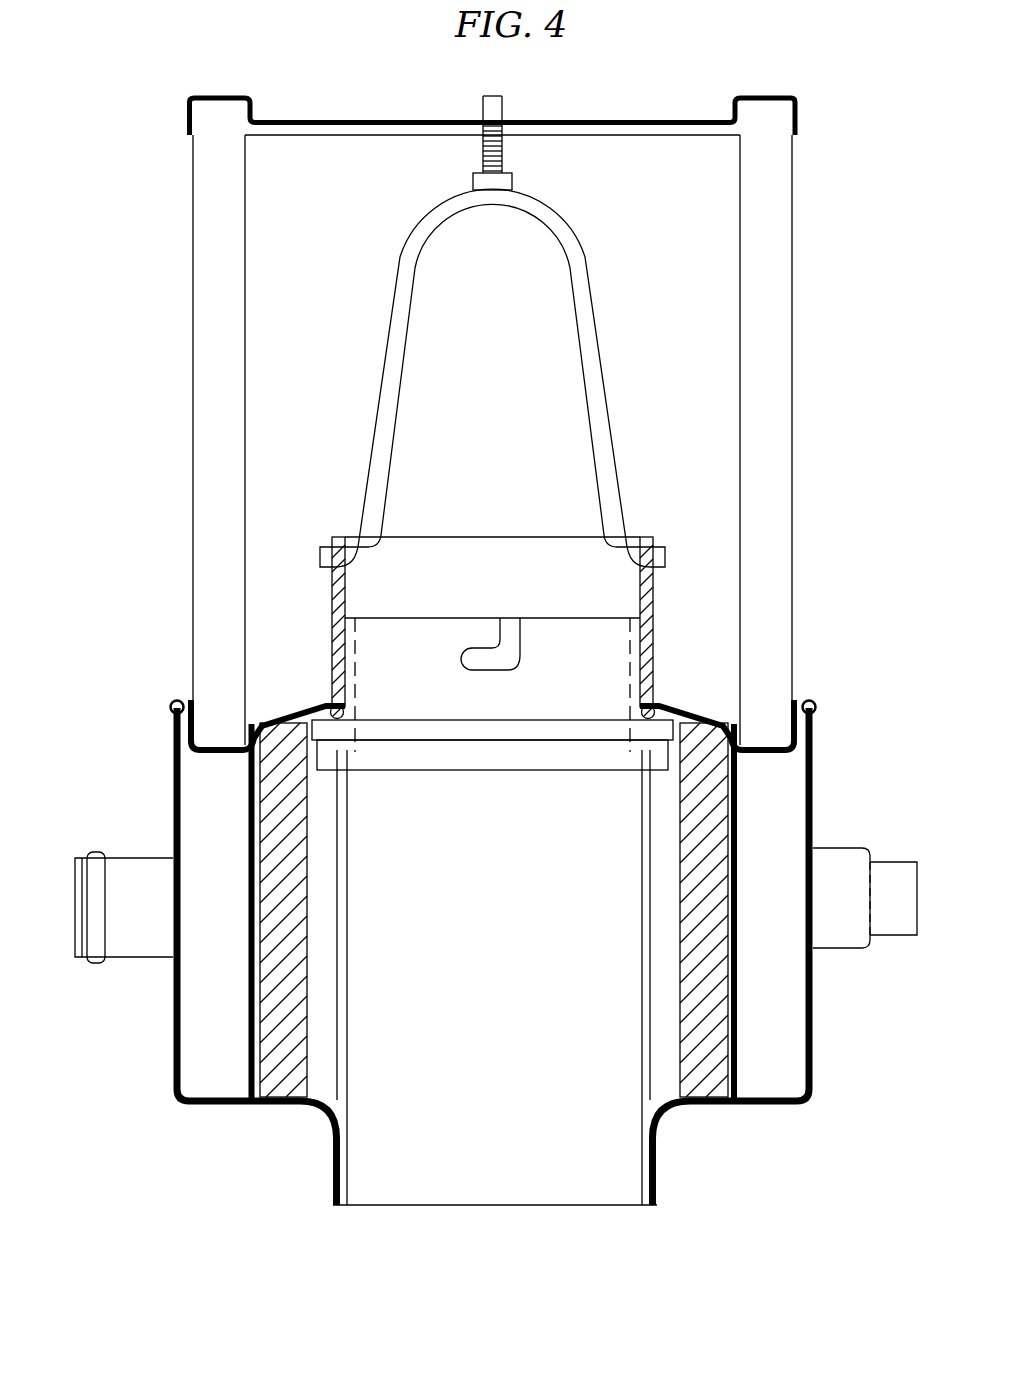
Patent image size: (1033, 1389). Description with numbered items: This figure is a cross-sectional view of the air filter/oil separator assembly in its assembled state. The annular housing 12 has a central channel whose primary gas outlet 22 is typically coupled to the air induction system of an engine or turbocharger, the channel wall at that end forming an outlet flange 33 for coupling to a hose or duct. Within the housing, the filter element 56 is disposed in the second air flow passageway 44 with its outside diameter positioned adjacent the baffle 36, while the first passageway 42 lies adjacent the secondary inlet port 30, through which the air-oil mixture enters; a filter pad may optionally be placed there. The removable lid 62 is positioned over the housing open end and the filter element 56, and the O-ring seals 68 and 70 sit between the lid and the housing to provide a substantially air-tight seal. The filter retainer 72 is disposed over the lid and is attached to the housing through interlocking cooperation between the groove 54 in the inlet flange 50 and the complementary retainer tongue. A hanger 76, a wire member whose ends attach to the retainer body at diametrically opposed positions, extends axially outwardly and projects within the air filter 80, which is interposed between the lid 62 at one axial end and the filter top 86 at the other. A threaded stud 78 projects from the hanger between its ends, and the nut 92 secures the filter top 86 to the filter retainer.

The annular housing 12 is at (830, 1012).
The primary gas outlet 22 is at (166, 1047).
The secondary inlet port 30 is at (70, 880).
The outlet flange 33 is at (333, 1167).
The baffle 36 is at (738, 823).
The first passageway 42 is at (210, 788).
The second air flow passageway 44 is at (332, 856).
The inlet flange 50 is at (355, 646).
The groove 54 is at (500, 663).
The filter element 56 is at (285, 975).
The removable lid 62 is at (264, 708).
The O-ring seal 68 is at (818, 712).
The O-ring seal 70 is at (331, 707).
The filter retainer 72 is at (666, 600).
The hanger 76 is at (592, 345).
The threaded stud 78 is at (497, 150).
The air filter 80 is at (786, 345).
The filter top 86 is at (672, 130).
The nut 92 is at (504, 108).